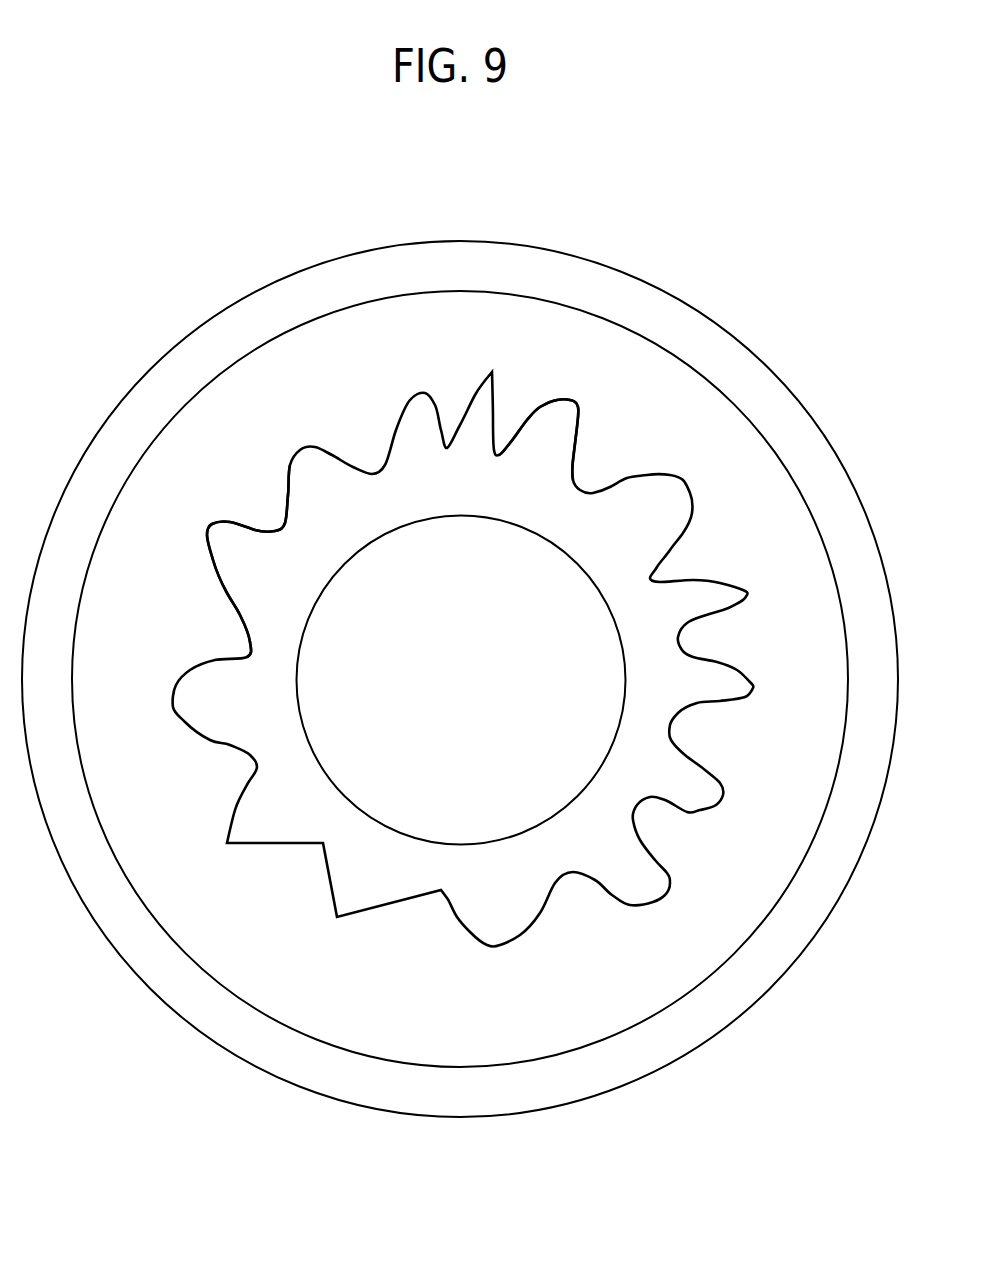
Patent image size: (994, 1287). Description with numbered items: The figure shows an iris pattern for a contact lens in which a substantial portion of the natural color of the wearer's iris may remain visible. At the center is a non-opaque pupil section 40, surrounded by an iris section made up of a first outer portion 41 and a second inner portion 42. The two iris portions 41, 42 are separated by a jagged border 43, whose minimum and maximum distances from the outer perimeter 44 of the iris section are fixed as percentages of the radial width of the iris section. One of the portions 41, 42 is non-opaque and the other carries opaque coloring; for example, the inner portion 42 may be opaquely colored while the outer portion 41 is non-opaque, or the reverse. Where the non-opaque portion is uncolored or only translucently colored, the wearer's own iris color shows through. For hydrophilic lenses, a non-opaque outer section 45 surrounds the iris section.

The pupil section 40 is at (475, 697).
The first outer portion 41 is at (134, 655).
The second inner portion 42 is at (257, 597).
The jagged border 43 is at (577, 432).
The outer perimeter 44 is at (617, 326).
The non-opaque outer section 45 is at (165, 387).